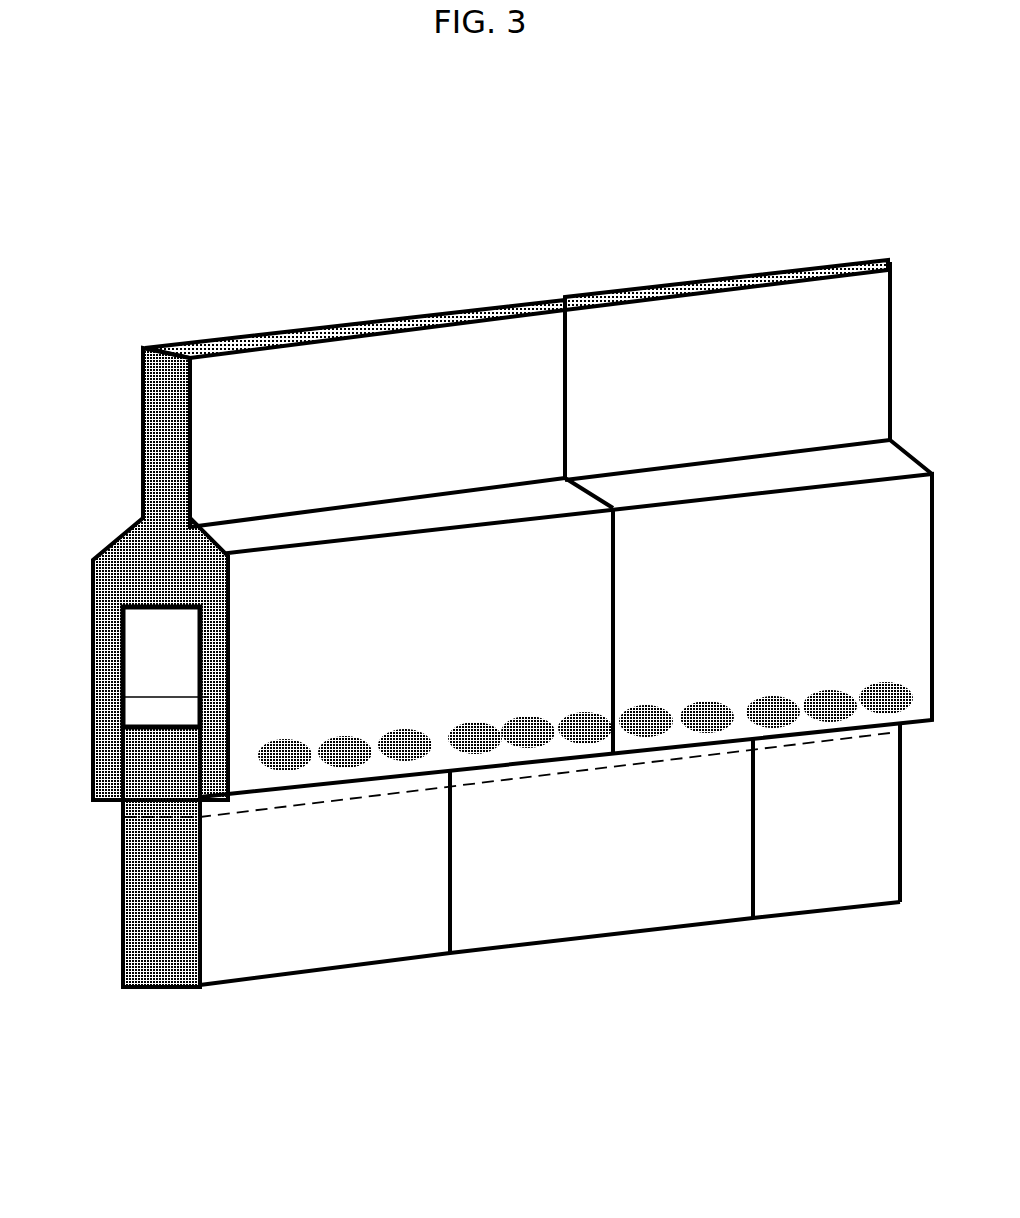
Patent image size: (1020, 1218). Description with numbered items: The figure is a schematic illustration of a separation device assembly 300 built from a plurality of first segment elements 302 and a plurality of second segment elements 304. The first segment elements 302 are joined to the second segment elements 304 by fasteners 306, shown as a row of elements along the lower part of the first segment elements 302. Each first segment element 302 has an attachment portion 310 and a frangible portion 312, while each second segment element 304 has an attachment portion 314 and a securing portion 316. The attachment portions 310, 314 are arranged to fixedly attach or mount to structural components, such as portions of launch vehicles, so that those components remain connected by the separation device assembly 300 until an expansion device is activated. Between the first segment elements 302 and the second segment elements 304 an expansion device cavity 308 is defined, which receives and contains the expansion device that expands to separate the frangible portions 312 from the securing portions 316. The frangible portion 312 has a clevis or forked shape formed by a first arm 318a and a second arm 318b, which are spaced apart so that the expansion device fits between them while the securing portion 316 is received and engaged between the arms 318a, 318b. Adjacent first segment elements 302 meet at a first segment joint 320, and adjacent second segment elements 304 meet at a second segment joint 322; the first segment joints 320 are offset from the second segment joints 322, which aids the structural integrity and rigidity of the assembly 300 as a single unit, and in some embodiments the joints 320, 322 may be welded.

The separation device assembly 300 is at (155, 200).
The first segment element 302 is at (385, 318).
The second segment element 304 is at (305, 972).
The fastener 306 is at (525, 728).
The expansion device cavity 308 is at (147, 638).
The attachment portion 310 is at (366, 434).
The frangible portion 312 is at (447, 619).
The attachment portion 314 is at (329, 922).
The securing portion 316 is at (179, 782).
The first arm 318a is at (103, 663).
The second arm 318b is at (127, 697).
The first segment joint 320 is at (570, 392).
The second segment joint 322 is at (455, 877).